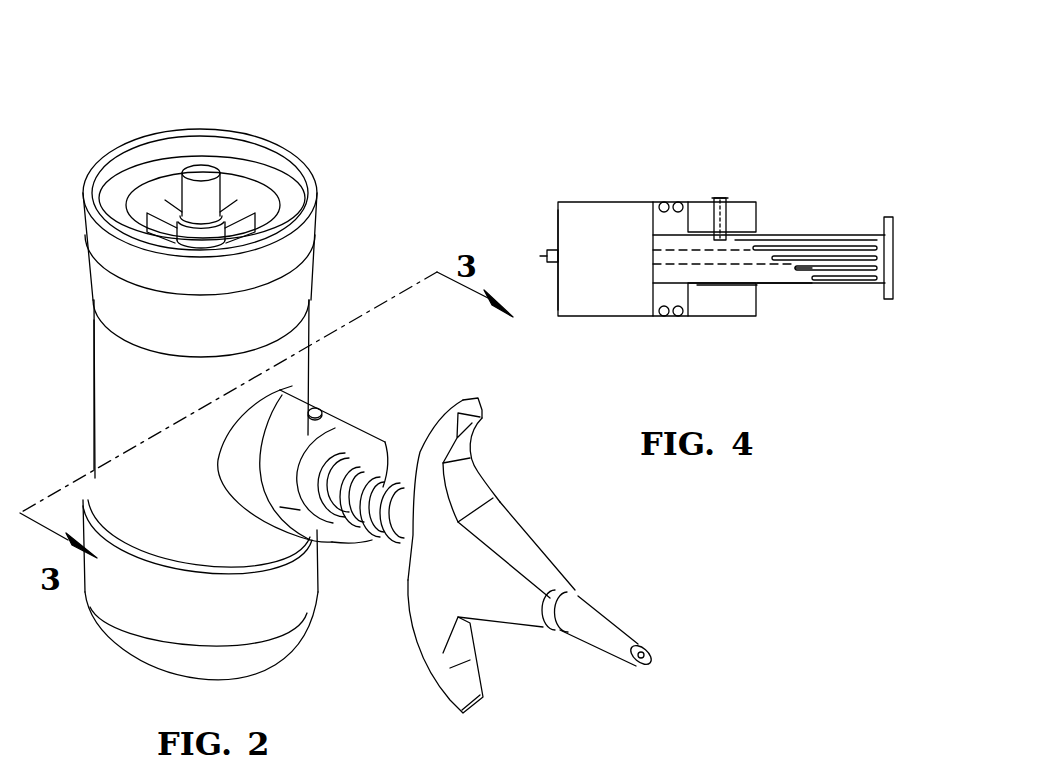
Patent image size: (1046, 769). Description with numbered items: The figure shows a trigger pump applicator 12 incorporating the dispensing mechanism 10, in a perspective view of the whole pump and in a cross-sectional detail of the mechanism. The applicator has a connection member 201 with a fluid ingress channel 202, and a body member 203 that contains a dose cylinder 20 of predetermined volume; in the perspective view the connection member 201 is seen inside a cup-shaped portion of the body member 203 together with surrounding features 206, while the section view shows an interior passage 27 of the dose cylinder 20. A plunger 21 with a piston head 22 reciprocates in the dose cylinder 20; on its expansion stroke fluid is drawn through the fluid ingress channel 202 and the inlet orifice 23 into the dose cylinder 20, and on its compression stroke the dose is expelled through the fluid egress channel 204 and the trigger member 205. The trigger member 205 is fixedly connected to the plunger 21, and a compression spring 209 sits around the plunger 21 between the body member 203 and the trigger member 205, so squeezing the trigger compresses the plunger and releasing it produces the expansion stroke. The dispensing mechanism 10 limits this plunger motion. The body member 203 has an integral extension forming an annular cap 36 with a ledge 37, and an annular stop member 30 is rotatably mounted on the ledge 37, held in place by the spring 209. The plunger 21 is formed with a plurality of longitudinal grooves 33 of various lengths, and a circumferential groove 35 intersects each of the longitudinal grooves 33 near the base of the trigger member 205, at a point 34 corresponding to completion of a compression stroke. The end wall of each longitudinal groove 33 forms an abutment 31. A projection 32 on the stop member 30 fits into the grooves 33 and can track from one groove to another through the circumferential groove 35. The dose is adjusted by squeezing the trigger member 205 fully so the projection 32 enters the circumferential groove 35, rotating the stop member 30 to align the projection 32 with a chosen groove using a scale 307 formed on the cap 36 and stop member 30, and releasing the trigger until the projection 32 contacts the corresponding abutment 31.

In FIG. 2, the dispensing mechanism 10 is at (410, 367).
In FIG. 4, the dispensing mechanism 10 is at (728, 145).
In FIG. 2, the trigger pump applicator 12 is at (343, 186).
In FIG. 4, the dose cylinder 20 is at (577, 318).
In FIG. 2, the plunger 21 is at (340, 527).
In FIG. 4, the plunger 21 is at (775, 284).
In FIG. 4, the piston head 22 is at (661, 312).
In FIG. 4, the inlet orifice 23 is at (547, 253).
In FIG. 4, the bore 27 is at (648, 258).
In FIG. 2, the stop member 30 is at (280, 507).
In FIG. 4, the stop member 30 is at (756, 217).
In FIG. 4, the abutment 31 is at (815, 281).
In FIG. 2, the projection 32 is at (318, 405).
In FIG. 4, the projection 32 is at (718, 198).
In FIG. 2, the longitudinal grooves 33 is at (362, 514).
In FIG. 4, the longitudinal grooves 33 is at (820, 233).
In FIG. 4, the point 34 is at (728, 75).
In FIG. 2, the circumferential groove 35 is at (404, 543).
In FIG. 4, the circumferential groove 35 is at (877, 233).
In FIG. 2, the annular cap 36 is at (245, 472).
In FIG. 4, the ledge 37 is at (714, 198).
In FIG. 2, the connection member 201 is at (226, 192).
In FIG. 2, the fluid ingress channel 202 is at (203, 173).
In FIG. 2, the body member 203 is at (93, 388).
In FIG. 4, the body member 203 is at (558, 200).
In FIG. 2, the fluid egress channel 204 is at (653, 660).
In FIG. 4, the fluid egress channel 204 is at (697, 286).
In FIG. 2, the trigger member 205 is at (517, 543).
In FIG. 2, the vanes 206 is at (160, 188).
In FIG. 2, the compression spring 209 is at (390, 477).
In FIG. 2, the scale 307 is at (284, 393).